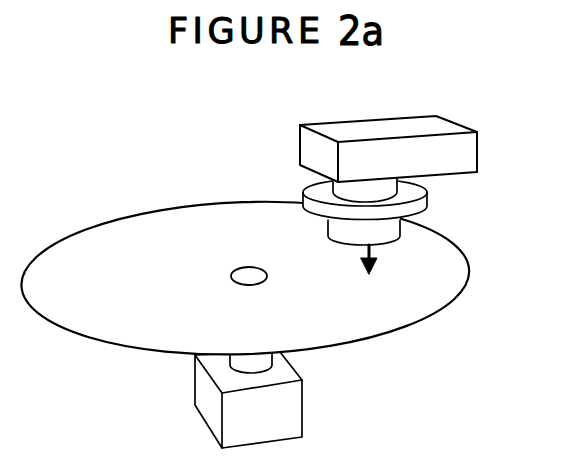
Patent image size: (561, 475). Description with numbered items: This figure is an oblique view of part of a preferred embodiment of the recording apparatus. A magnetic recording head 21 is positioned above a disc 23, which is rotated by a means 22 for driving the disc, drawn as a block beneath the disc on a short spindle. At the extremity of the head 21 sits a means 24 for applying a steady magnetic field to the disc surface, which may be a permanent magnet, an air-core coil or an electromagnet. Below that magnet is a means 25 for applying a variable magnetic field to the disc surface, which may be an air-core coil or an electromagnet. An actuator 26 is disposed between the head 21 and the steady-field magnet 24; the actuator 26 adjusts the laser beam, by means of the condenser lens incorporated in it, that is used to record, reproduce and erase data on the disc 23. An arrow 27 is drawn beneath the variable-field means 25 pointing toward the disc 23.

The magnetic recording head 21 is at (427, 125).
The means for driving a disc 22 is at (285, 410).
The disc 23 is at (412, 298).
The means for applying a steady magnetic field 24 is at (426, 199).
The means for applying a variable magnetic field 25 is at (400, 227).
The actuator 26 is at (333, 187).
The load direction arrow 27 is at (374, 257).